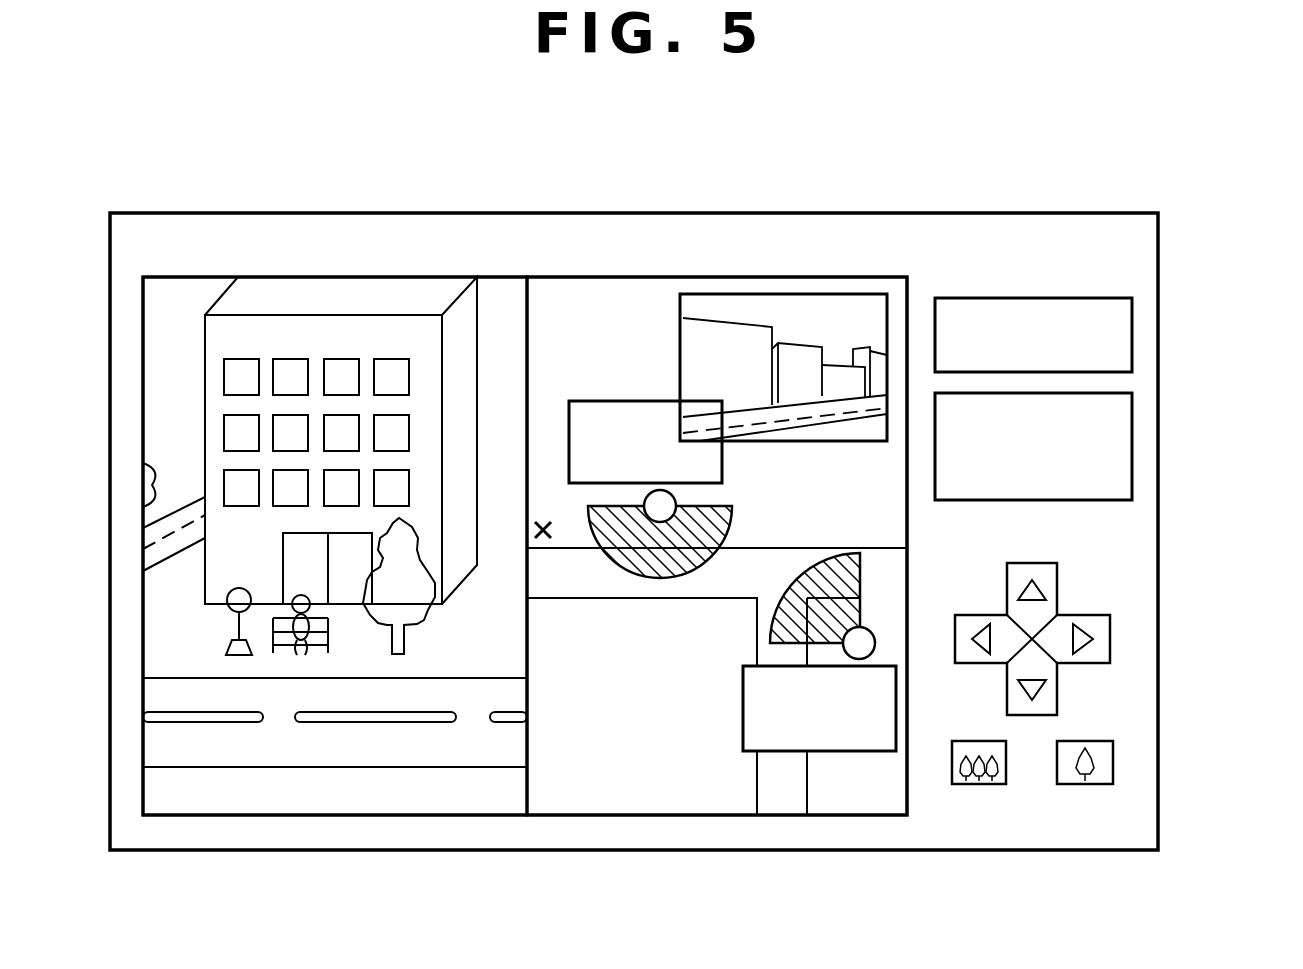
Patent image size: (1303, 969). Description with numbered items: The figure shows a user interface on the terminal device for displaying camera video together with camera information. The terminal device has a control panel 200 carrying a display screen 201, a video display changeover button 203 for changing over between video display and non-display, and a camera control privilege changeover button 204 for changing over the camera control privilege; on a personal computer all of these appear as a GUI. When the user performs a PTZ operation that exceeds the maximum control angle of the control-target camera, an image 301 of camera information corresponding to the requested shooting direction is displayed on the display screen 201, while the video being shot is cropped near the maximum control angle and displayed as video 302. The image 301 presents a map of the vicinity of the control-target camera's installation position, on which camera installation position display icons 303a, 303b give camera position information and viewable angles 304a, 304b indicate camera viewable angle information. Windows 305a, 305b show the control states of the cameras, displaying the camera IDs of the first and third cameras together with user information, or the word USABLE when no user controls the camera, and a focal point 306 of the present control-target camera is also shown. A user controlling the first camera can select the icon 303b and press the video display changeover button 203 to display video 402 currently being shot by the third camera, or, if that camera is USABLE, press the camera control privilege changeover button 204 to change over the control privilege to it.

The control panel 200 is at (1090, 212).
The display screen 201 is at (885, 266).
The video 302 is at (500, 290).
The image 301 is at (603, 290).
The video 402 is at (738, 295).
The window 305a is at (605, 400).
The camera installation position display icon 303a is at (676, 506).
The viewable angle 304a is at (660, 572).
The focal point 306 is at (545, 545).
The viewable angle 304b is at (770, 630).
The camera installation position display icon 303b is at (875, 643).
The window 305b is at (775, 752).
The video display changeover button 203 is at (1132, 332).
The camera control privilege changeover button 204 is at (1132, 445).